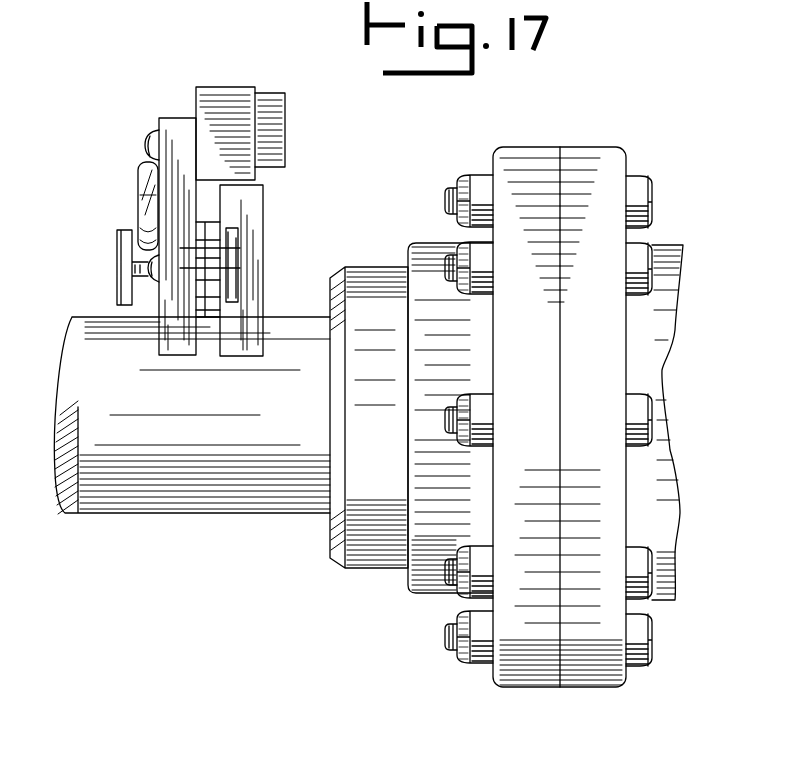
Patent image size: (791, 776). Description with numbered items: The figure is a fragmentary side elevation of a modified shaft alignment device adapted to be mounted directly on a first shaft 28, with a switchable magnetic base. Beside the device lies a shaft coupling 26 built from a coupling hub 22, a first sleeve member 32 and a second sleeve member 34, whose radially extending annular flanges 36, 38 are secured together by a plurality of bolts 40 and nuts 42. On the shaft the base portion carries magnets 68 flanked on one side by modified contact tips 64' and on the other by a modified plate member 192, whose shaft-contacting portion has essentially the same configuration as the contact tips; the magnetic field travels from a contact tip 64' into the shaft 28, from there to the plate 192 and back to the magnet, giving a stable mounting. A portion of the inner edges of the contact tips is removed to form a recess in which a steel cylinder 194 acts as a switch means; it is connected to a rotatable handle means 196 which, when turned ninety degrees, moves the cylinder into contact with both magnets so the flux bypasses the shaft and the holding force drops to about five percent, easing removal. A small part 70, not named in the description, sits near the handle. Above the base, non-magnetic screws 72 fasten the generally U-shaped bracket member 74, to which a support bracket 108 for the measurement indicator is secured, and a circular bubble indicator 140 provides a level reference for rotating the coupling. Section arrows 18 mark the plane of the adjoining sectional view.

The section line 18- 18 is at (160, 602).
The coupling hub 22 is at (345, 570).
The shaft coupling 26 is at (556, 690).
The first shaft 28 is at (65, 516).
The first sleeve member 32 is at (412, 596).
The second sleeve member 34 is at (664, 597).
The annular flange 36 is at (497, 690).
The annular flange 38 is at (620, 688).
The bolts 40 is at (652, 660).
The nuts 42 is at (458, 658).
The contact tips 64' is at (274, 270).
The magnets 68 is at (212, 224).
The clamp 70 is at (155, 284).
The screws 72 is at (150, 135).
The U-shaped bracket member 74 is at (196, 99).
The support bracket 108 is at (285, 115).
The circular bubble indicator 140 is at (138, 186).
The modified plate member 192 is at (170, 338).
The steel cylinder 194 is at (238, 243).
The rotatable handle means 196 is at (117, 293).